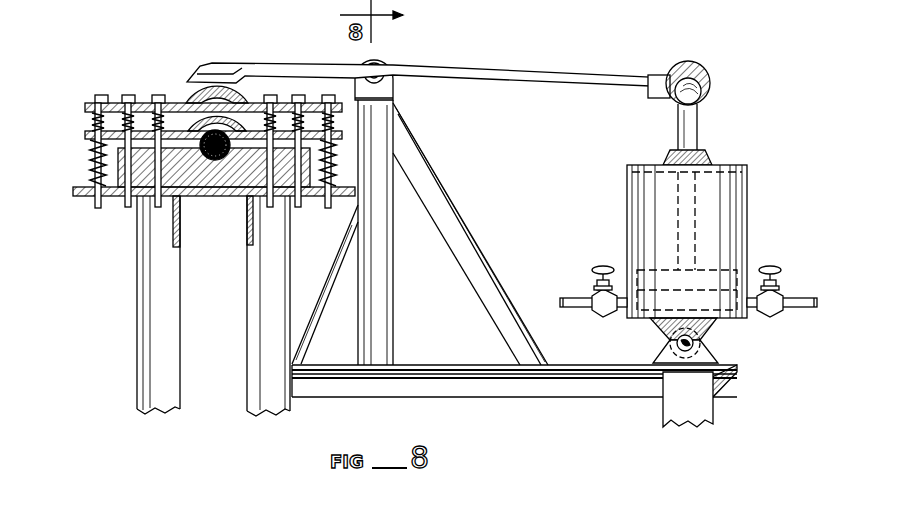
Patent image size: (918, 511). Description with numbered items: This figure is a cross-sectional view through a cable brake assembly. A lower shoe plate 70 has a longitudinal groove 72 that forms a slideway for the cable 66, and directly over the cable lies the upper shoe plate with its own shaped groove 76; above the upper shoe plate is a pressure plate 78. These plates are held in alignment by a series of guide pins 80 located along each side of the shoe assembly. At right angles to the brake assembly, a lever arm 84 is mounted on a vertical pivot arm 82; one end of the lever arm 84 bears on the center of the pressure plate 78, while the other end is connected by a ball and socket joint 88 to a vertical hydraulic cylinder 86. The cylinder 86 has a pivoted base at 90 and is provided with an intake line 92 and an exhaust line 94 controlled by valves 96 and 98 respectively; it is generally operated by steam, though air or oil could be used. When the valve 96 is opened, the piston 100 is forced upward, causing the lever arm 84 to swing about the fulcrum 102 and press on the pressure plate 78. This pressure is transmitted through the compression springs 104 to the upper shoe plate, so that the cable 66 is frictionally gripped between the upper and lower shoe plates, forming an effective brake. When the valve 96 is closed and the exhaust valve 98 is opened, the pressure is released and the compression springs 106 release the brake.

The cable 66 is at (212, 160).
The lower shoe plate 70 is at (241, 243).
The longitudinal groove 72 is at (160, 203).
The shaped groove 76 is at (190, 103).
The pressure plate 78 is at (213, 69).
The guide pins 80 is at (158, 96).
The vertical pivot arm 82 is at (458, 232).
The lever arm 84 is at (520, 80).
The vertical hydraulic cylinder 86 is at (683, 241).
The ball and socket joint 88 is at (690, 77).
The pivoted base 90 is at (702, 342).
The intake line 92 is at (566, 298).
The exhaust line 94 is at (794, 298).
The intake valve 96 is at (603, 266).
The exhaust valve 98 is at (770, 266).
The piston 100 is at (650, 267).
The fulcrum 102 is at (378, 64).
The compression springs 104 is at (92, 122).
The compression springs 106 is at (92, 173).